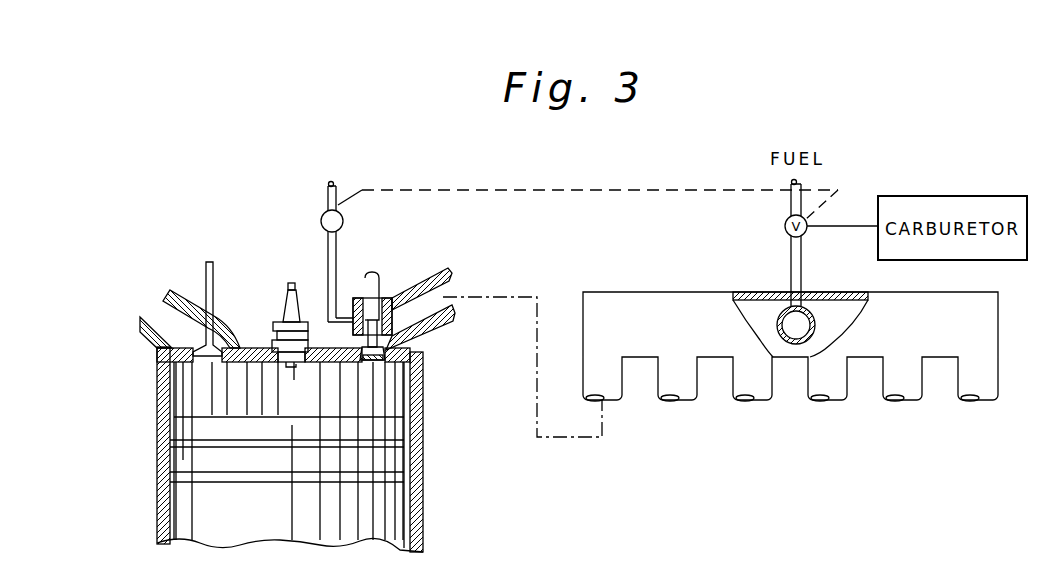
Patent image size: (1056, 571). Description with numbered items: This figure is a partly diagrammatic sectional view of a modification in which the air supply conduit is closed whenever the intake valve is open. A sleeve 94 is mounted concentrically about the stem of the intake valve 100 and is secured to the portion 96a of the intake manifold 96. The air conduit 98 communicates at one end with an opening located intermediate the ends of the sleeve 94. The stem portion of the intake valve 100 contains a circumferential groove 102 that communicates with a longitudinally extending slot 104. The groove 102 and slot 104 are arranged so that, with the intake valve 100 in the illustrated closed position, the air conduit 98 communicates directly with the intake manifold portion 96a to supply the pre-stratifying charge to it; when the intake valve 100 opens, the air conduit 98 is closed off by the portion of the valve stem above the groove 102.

The sleeve 94 is at (392, 296).
The intake manifold 96 is at (668, 302).
The portion of the intake manifold 96a is at (446, 321).
The air conduit 98 is at (328, 270).
The intake valve 100 is at (374, 363).
The circumferential groove 102 is at (391, 313).
The longitudinally extending slot 104 is at (358, 333).